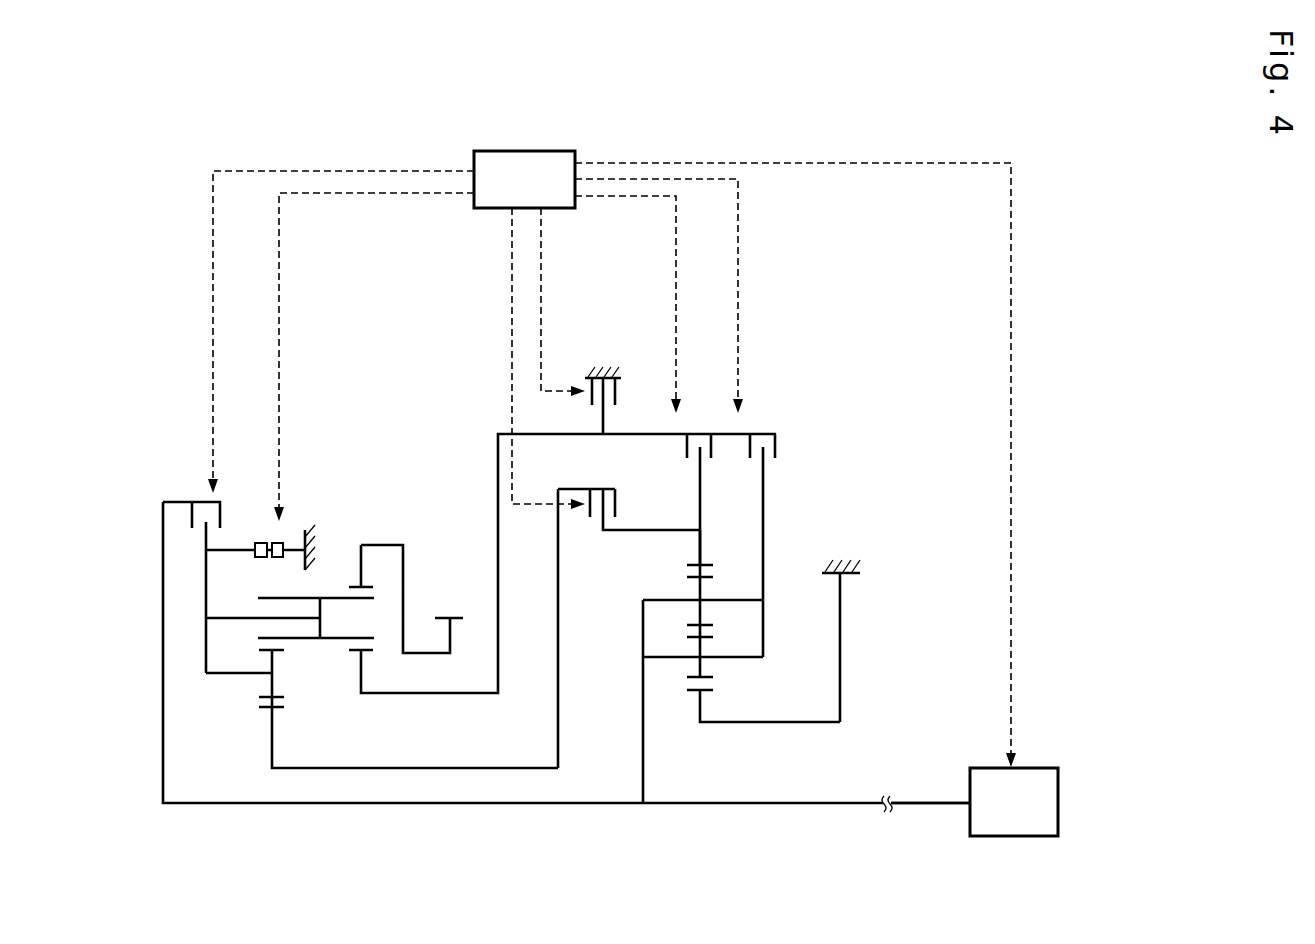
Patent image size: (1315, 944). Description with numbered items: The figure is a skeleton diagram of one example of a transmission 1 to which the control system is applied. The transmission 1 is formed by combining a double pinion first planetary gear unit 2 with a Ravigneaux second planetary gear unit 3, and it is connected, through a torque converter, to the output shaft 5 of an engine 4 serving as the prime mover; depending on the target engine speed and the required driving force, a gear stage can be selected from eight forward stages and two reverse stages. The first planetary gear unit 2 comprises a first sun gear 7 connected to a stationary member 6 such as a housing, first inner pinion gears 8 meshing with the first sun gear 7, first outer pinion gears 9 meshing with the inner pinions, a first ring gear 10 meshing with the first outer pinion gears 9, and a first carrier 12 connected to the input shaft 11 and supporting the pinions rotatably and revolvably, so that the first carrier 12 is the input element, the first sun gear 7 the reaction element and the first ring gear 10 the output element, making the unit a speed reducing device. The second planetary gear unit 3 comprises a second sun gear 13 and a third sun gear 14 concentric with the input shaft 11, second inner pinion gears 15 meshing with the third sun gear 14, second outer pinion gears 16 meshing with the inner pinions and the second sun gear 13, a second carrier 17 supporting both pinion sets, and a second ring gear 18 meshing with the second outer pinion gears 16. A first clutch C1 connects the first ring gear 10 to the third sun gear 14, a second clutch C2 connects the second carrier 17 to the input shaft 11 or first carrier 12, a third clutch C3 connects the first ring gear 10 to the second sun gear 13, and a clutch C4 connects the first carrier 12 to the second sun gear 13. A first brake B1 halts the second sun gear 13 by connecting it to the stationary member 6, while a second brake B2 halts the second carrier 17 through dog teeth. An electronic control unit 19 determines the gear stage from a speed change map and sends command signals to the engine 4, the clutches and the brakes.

The transmission 1 is at (838, 298).
The first planetary gear unit 2 is at (808, 470).
The second planetary gear unit 3 is at (322, 462).
The engine 4 is at (1060, 803).
The output shaft 5 is at (940, 801).
The stationary member 6 is at (306, 528).
The first sun gear 7 is at (705, 690).
The first inner pinion gears 8 is at (703, 665).
The first outer pinion gears 9 is at (703, 583).
The first ring gear 10 is at (703, 552).
The input shaft 11 is at (782, 805).
The first carrier 12 is at (641, 703).
The second sun gear 13 is at (364, 656).
The third sun gear 14 is at (268, 706).
The second inner pinion gears 15 is at (274, 660).
The second outer pinion gears 16 is at (325, 597).
The second carrier 17 is at (205, 653).
The second ring gear 18 is at (368, 588).
The electronic control unit 19 is at (525, 151).
The first clutch C1 is at (590, 538).
The second clutch C2 is at (203, 491).
The third clutch C3 is at (693, 412).
The clutch C4 is at (758, 415).
The first brake B1 is at (630, 364).
The second brake B2 is at (268, 522).